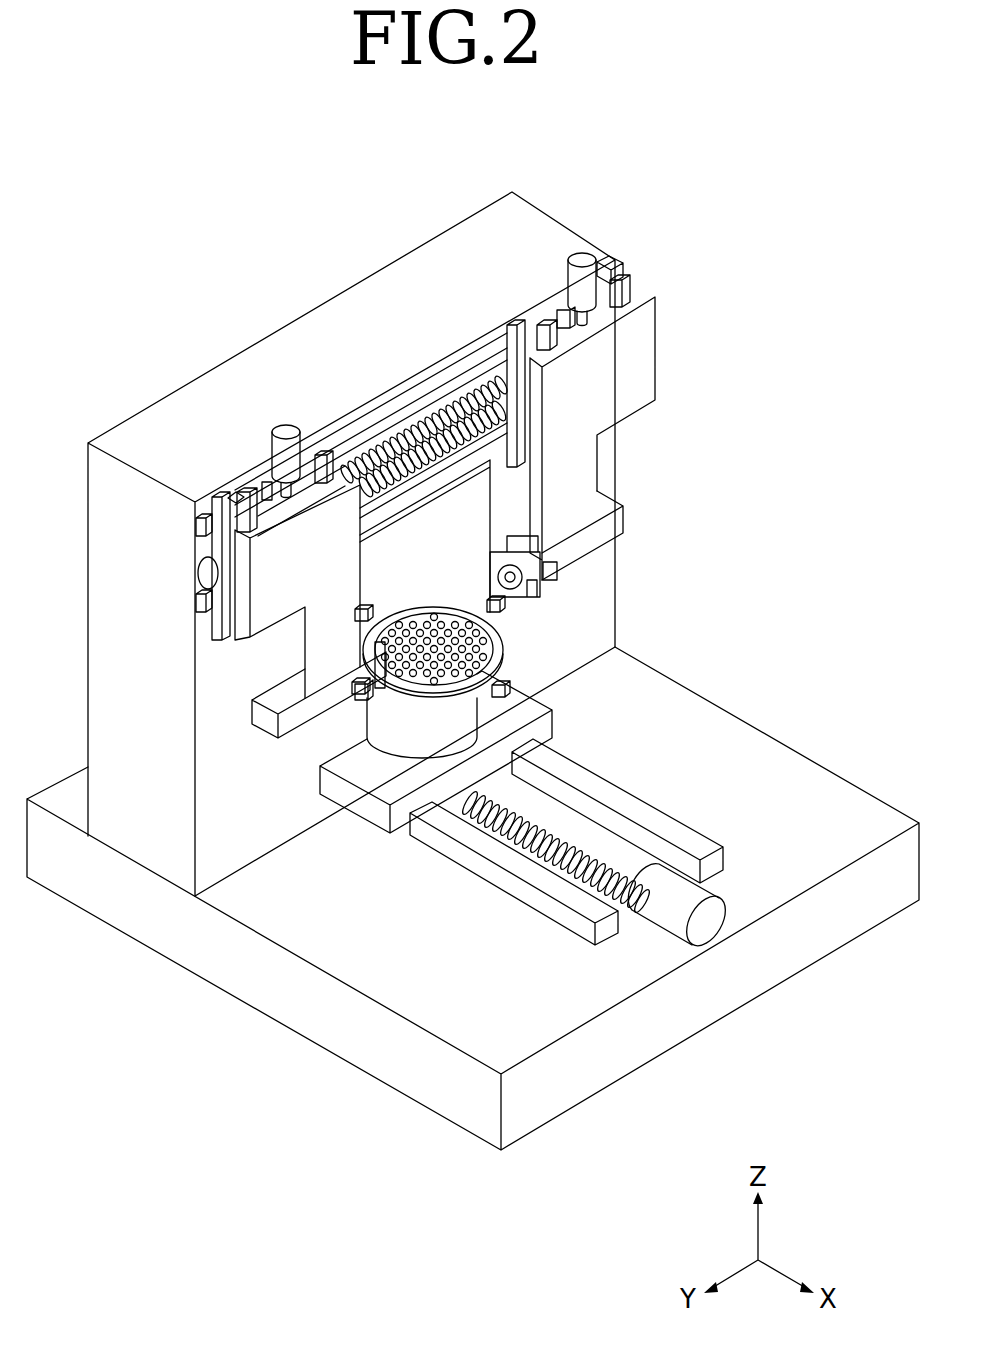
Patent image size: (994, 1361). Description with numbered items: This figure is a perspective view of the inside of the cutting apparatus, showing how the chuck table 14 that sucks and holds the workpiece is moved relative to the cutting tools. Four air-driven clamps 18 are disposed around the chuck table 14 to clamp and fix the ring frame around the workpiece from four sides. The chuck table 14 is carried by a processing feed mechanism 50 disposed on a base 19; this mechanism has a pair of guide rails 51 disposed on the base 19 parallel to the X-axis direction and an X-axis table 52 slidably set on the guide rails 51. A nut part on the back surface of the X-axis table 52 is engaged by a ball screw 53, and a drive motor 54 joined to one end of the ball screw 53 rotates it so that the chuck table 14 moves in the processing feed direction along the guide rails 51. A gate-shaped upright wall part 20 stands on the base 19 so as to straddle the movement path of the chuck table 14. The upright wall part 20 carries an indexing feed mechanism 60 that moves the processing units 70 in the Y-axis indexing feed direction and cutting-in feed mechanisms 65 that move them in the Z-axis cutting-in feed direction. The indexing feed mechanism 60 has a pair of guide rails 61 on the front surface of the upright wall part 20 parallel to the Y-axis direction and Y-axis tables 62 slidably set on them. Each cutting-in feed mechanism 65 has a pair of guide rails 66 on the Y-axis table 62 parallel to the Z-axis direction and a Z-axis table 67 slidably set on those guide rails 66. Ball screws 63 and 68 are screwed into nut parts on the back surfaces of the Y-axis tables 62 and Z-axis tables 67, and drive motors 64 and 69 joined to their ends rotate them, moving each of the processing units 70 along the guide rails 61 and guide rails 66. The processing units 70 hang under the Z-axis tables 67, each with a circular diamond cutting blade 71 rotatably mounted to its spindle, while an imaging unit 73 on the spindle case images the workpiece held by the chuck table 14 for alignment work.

The chuck table 14 is at (412, 592).
The clamps 18 is at (479, 604).
The base 19 is at (776, 742).
The upright wall part 20 is at (540, 218).
The processing feed mechanism 50 is at (594, 850).
The guide rails 51 is at (690, 833).
The X-axis table 52 is at (541, 716).
The ball screw 53 is at (568, 805).
The drive motor 54 is at (710, 927).
The indexing feed mechanism 60 is at (168, 576).
The guide rails 61 is at (196, 526).
The Y-axis tables 62 is at (228, 492).
The ball screws 63 is at (420, 450).
The drive motors 64 is at (190, 564).
The cutting-in feed mechanisms 65 is at (252, 461).
The guide rails 66 is at (321, 450).
The Z-axis table 67 is at (264, 622).
The ball screws 68 is at (266, 482).
The drive motors 69 is at (287, 432).
The processing units 70 is at (632, 505).
The cutting blade 71 is at (512, 582).
The imaging unit 73 is at (556, 575).